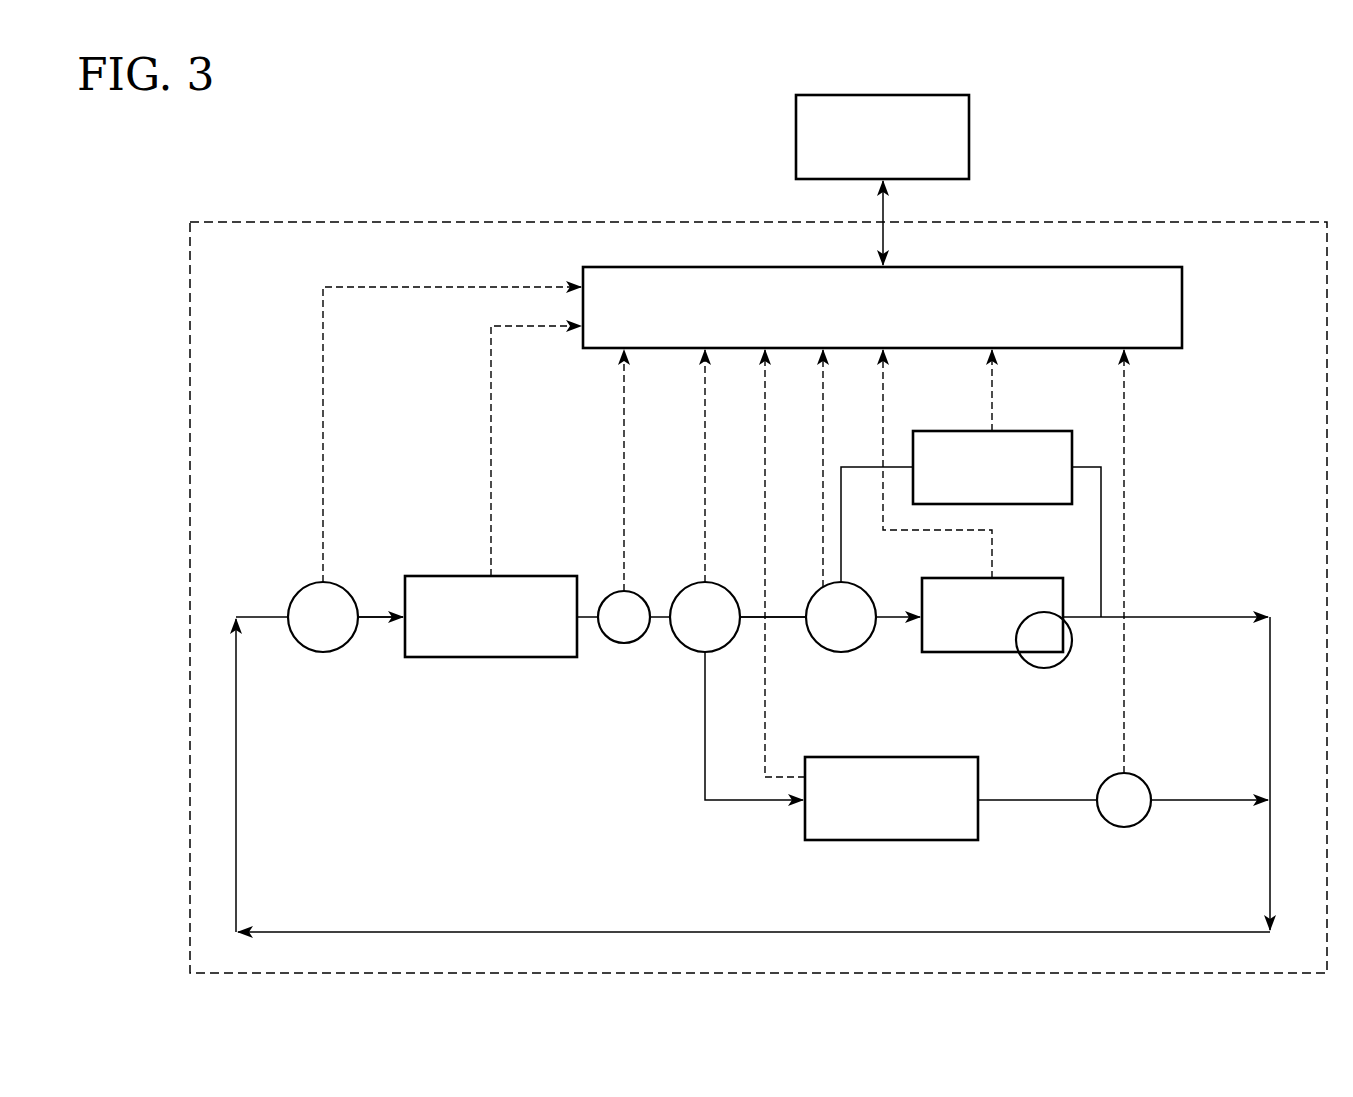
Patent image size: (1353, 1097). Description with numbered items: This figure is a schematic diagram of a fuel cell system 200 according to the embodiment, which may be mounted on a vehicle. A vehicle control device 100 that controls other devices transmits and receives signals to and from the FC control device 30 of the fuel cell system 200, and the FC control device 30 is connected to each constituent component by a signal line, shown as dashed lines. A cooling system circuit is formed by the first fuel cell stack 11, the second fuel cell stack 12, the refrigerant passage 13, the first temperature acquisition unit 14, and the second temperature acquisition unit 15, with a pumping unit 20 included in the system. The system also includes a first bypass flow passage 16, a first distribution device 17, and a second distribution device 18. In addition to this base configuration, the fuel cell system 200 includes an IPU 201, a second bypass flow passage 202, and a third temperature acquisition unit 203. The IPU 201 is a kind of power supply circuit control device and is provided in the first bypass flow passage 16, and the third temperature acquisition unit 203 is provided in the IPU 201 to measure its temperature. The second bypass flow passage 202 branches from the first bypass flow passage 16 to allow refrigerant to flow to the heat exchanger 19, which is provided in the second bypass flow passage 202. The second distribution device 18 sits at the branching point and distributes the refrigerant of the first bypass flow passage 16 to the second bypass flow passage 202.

The fuel cell system 200 is at (310, 182).
The control device 100 is at (795, 137).
The FC control device 30 is at (1176, 266).
The pumping unit 20 is at (346, 584).
The refrigerant passage 13 is at (380, 612).
The first fuel cell stack 11 is at (490, 658).
The first temperature acquisition unit 14 is at (640, 593).
The first distribution device 17 is at (716, 583).
The first bypass flow passage 16 is at (781, 612).
The second distribution device 18 is at (838, 653).
The second bypass flow passage 202 is at (833, 490).
The heat exchanger 19 is at (1030, 430).
The IPU 201 is at (1027, 577).
The third temperature acquisition unit 203 is at (1050, 669).
The second temperature acquisition unit 15 is at (1144, 785).
The second fuel cell stack 12 is at (890, 842).